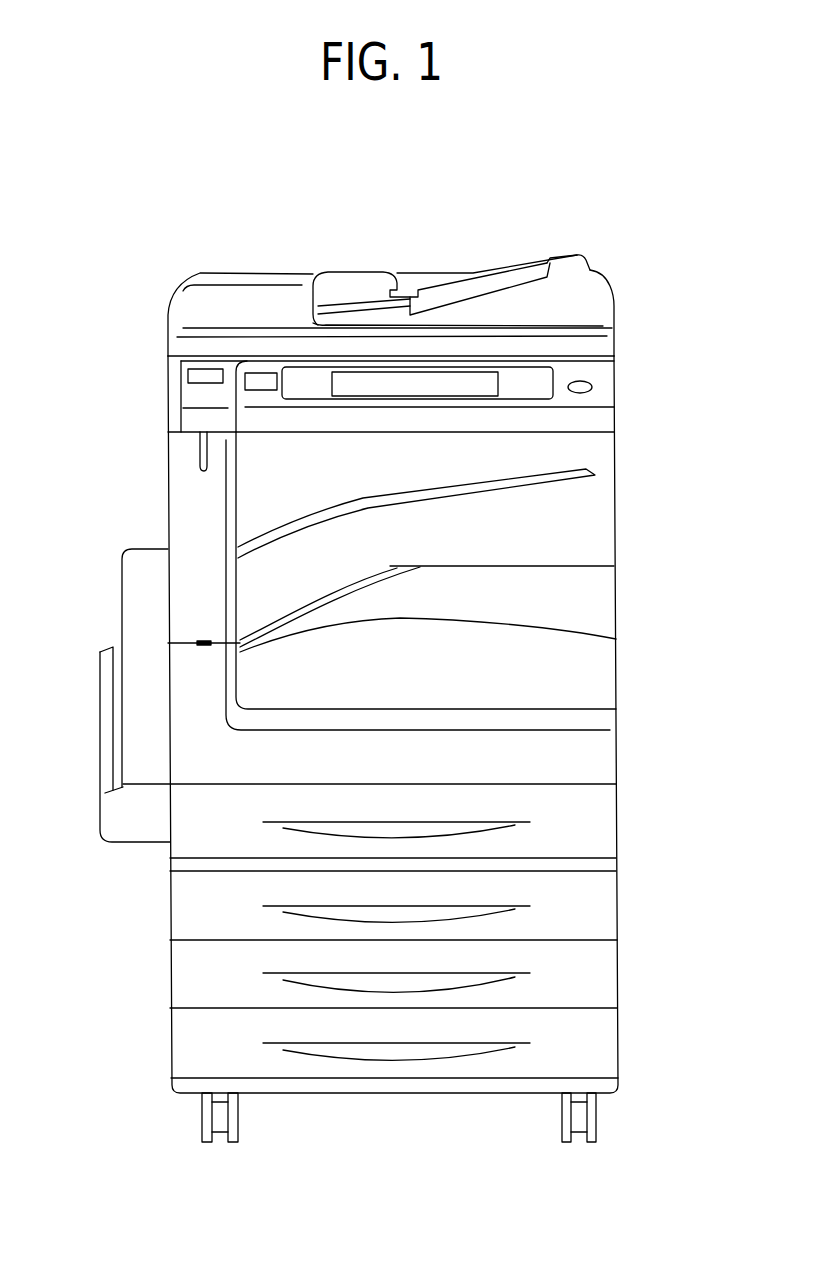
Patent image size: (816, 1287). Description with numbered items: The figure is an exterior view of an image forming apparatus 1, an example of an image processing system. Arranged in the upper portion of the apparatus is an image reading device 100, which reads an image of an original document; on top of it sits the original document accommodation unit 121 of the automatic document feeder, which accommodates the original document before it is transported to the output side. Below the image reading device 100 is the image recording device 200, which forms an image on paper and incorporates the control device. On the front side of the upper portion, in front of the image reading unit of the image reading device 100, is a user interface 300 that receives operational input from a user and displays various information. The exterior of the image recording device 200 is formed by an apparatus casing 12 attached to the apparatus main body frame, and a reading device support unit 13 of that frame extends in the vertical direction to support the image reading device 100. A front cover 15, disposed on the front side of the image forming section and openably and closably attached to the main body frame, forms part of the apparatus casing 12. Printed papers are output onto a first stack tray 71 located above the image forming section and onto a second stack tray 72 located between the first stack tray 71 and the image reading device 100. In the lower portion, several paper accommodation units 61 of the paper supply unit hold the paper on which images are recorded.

The image forming apparatus 1 is at (150, 230).
The image reading device 100 is at (150, 337).
The original document accommodation unit 121 is at (247, 273).
The image recording device 200 is at (651, 677).
The user interface 300 is at (513, 401).
The reading device support unit 13 is at (237, 456).
The apparatus casing 12 is at (616, 521).
The front cover 15 is at (617, 745).
The first stack tray 71 is at (332, 576).
The second stack tray 72 is at (369, 497).
The paper accommodation unit 61 is at (617, 826).